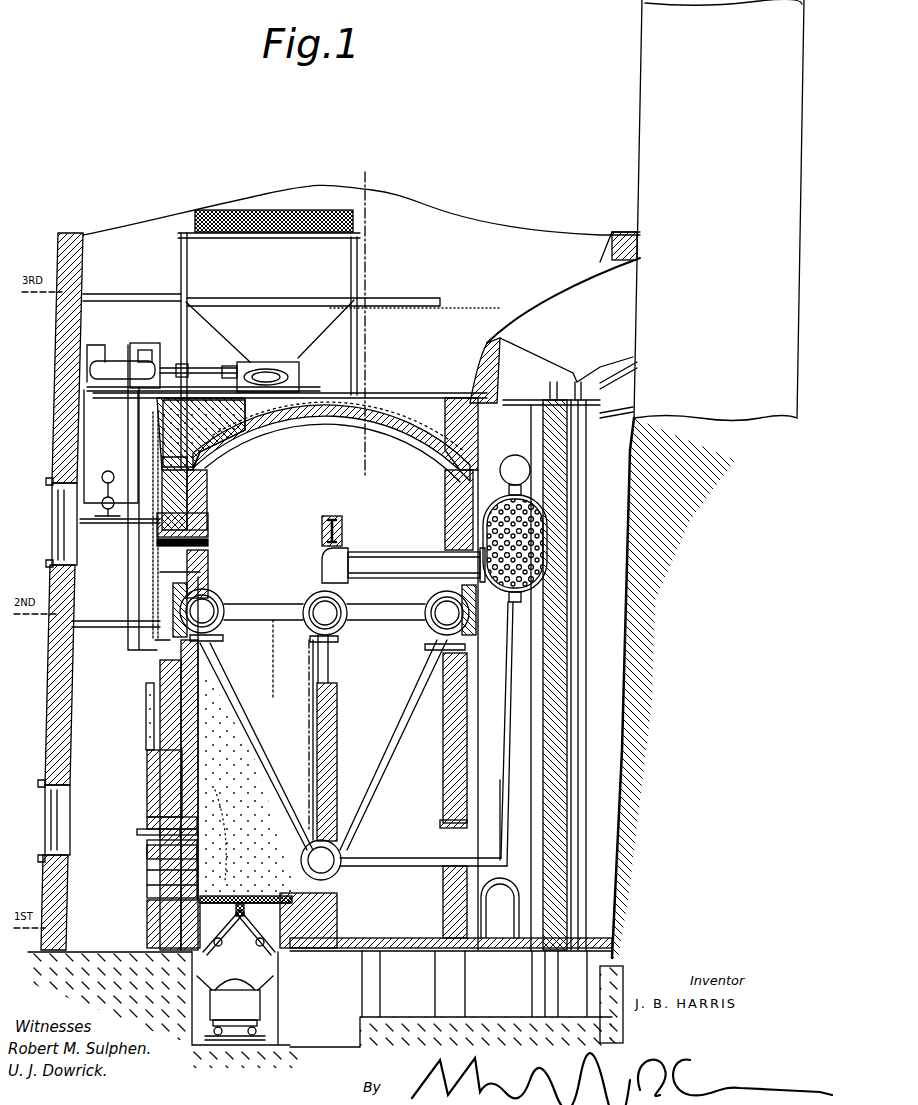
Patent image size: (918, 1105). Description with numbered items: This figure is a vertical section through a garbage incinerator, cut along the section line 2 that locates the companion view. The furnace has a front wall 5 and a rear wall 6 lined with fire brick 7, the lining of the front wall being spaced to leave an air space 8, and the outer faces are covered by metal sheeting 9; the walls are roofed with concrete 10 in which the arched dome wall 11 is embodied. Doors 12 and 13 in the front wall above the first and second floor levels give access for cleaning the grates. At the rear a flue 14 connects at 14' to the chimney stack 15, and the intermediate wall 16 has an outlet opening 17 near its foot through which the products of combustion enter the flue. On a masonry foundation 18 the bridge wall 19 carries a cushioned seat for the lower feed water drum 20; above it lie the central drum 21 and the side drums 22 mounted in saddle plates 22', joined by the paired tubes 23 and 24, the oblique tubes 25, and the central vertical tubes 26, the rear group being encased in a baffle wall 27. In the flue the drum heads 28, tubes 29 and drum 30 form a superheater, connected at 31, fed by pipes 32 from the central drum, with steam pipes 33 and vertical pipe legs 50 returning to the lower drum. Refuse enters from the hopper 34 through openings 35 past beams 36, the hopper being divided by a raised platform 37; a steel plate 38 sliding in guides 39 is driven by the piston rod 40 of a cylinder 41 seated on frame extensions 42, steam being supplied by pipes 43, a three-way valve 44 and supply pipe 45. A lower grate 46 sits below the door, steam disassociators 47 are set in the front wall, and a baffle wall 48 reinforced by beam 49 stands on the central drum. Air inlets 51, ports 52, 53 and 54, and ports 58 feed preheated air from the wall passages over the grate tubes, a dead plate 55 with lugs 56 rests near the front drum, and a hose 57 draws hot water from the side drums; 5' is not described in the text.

The section line 2— 2 is at (330, 977).
The front wall 5 is at (143, 805).
The motor 5' is at (145, 344).
The rear wall 6 is at (505, 725).
The fire brick lining 7 is at (152, 737).
The air space 8 is at (183, 487).
The metal sheeting 9 is at (600, 663).
The concrete roof 10 is at (182, 435).
The arched dome wall 11 is at (423, 458).
The lower door 12 is at (143, 872).
The upper door 13 is at (147, 565).
The flue 14 is at (556, 675).
The flue connection 14' is at (551, 360).
The chimney stack 15 is at (719, 210).
The intermediate wall 16 is at (453, 734).
The outlet opening 17 is at (446, 841).
The foundation 18 is at (372, 985).
The bridge wall 19 is at (322, 920).
The lower feed water drum 20 is at (341, 860).
The central drum 21 is at (342, 630).
The side drum 22 is at (300, 628).
The saddle plate 22' is at (294, 678).
The grate tubes 23 is at (273, 640).
The tubes 24 is at (355, 738).
The oblique tubes 25 is at (270, 782).
The central vertical tubes 26 is at (310, 695).
The baffle wall 27 is at (336, 712).
The drum head 28 is at (550, 547).
The superheater tubes 29 is at (633, 430).
The superheater drum 30 is at (532, 468).
The drum connection 31 is at (477, 510).
The pipe 32 is at (416, 565).
The steam pipes 33 is at (640, 370).
The hopper 34 is at (210, 283).
The openings 35 is at (266, 428).
The beams 36 is at (258, 424).
The raised platform 37 is at (186, 233).
The steel plate 38 is at (262, 362).
The longitudinal guides 39 is at (250, 370).
The piston rod 40 is at (205, 368).
The cylinder 41 is at (118, 362).
The steel frame extensions 42 is at (90, 370).
The steam pipes 43 is at (140, 415).
The three-way valve 44 is at (102, 508).
The steam supply pipe 45 is at (104, 512).
The grate 46 is at (195, 912).
The steam disassociators 47 is at (137, 834).
The baffle wall 48 is at (314, 538).
The longitudinal beam 49 is at (320, 530).
The vertical pipe legs 50 is at (500, 800).
The air inlets 51 is at (211, 500).
The ports 52 is at (215, 520).
The ports 53 is at (227, 816).
The air intake openings 54 is at (140, 812).
The dead plate 55 is at (163, 577).
The lugs 56 is at (290, 638).
The hose or pipe 57 is at (478, 395).
The air inlet ports 58 is at (185, 575).